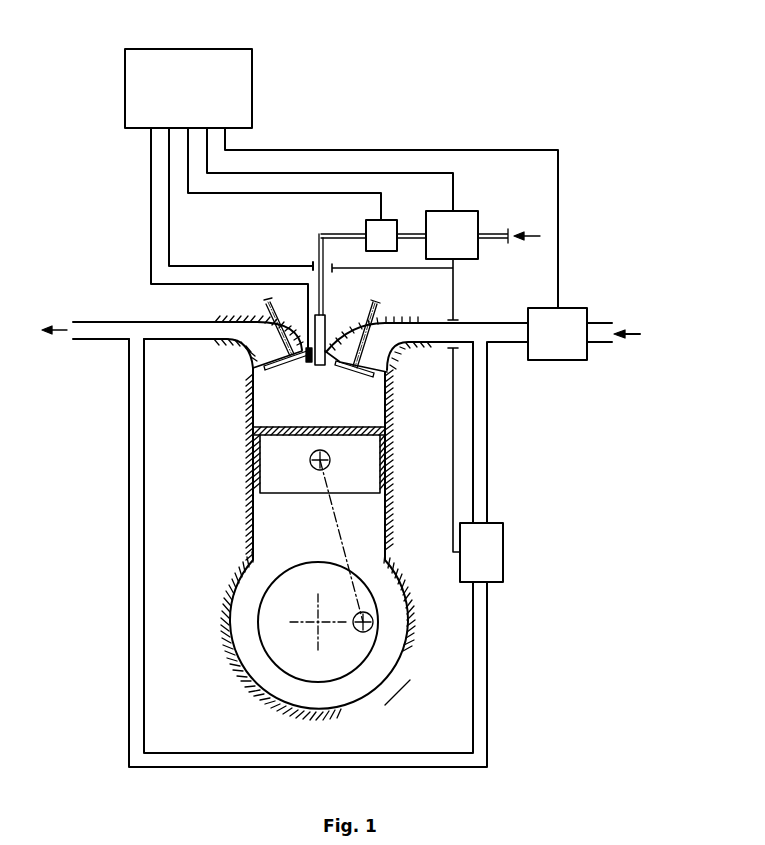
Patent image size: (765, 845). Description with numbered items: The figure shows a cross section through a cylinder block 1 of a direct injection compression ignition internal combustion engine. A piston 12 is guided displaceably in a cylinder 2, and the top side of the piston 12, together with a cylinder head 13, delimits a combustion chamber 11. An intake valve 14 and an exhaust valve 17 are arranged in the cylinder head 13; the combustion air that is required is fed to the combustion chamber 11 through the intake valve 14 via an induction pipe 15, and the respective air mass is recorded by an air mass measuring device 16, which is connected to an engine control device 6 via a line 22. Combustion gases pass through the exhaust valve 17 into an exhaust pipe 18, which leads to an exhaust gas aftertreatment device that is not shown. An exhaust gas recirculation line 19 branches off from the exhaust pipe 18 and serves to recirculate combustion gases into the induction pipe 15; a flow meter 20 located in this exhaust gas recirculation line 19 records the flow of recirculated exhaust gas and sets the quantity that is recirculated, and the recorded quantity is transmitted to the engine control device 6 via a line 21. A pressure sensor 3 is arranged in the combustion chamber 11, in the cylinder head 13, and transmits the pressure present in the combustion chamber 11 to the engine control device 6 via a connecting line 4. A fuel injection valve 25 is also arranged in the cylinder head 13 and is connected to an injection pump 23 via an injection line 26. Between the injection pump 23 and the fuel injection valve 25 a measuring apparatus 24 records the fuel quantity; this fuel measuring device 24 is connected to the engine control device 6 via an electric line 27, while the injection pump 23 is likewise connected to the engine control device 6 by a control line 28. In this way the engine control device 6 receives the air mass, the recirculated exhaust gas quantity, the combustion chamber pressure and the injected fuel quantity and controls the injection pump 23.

The cylinder block 1 is at (244, 519).
The cylinder 2 is at (388, 425).
The pressure sensor 3 is at (306, 345).
The connecting line 4 is at (151, 245).
The engine control device 6 is at (258, 74).
The combustion chamber 11 is at (390, 392).
The piston 12 is at (250, 462).
The cylinder head 13 is at (258, 368).
The intake valve 14 is at (378, 332).
The induction pipe 15 is at (458, 325).
The air mass measuring device 16 is at (573, 308).
The exhaust valve 17 is at (262, 395).
The exhaust pipe 18 is at (170, 322).
The exhaust gas recirculation line 19 is at (137, 474).
The flow meter 20 is at (490, 549).
The line 21 is at (205, 266).
The line 22 is at (412, 153).
The injection pump 23 is at (478, 218).
The measuring apparatus 24 is at (366, 228).
The fuel injection valve 25 is at (326, 332).
The injection line 26 is at (319, 240).
The electric line 27 is at (322, 193).
The control line 28 is at (365, 173).